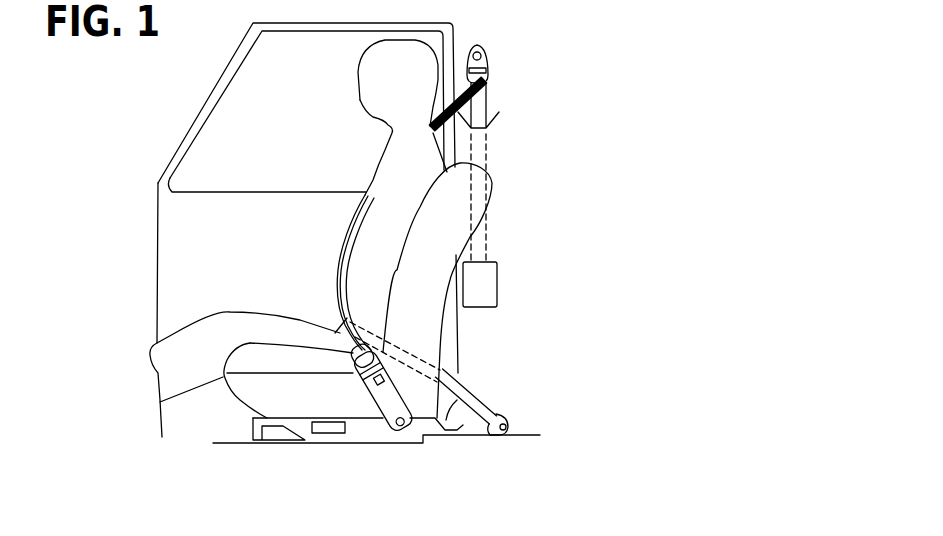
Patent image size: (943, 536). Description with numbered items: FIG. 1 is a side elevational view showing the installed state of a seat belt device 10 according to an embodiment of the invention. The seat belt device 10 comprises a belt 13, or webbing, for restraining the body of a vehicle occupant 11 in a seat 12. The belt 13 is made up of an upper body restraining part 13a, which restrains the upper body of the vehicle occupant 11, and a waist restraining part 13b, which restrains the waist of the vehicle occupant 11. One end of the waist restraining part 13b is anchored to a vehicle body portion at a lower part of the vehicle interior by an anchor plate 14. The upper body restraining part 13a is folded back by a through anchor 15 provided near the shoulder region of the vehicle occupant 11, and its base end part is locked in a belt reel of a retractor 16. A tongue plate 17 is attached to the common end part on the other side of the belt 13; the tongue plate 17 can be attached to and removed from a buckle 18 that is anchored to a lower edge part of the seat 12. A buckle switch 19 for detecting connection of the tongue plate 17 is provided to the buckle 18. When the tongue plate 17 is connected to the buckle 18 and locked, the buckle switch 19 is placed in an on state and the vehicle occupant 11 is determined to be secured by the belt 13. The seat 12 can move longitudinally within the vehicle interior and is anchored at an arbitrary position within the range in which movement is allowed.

The seat belt device 10 is at (517, 276).
The vehicle occupant 11 is at (383, 182).
The seat 12 is at (427, 313).
The belt 13 is at (333, 285).
The upper body restraining part 13a is at (478, 113).
The waist restraining part 13b is at (463, 392).
The anchor plate 14 is at (507, 418).
The through anchor 15 is at (489, 68).
The retractor 16 is at (487, 277).
The tongue plate 17 is at (320, 373).
The buckle 18 is at (383, 383).
The buckle switch 19 is at (368, 397).